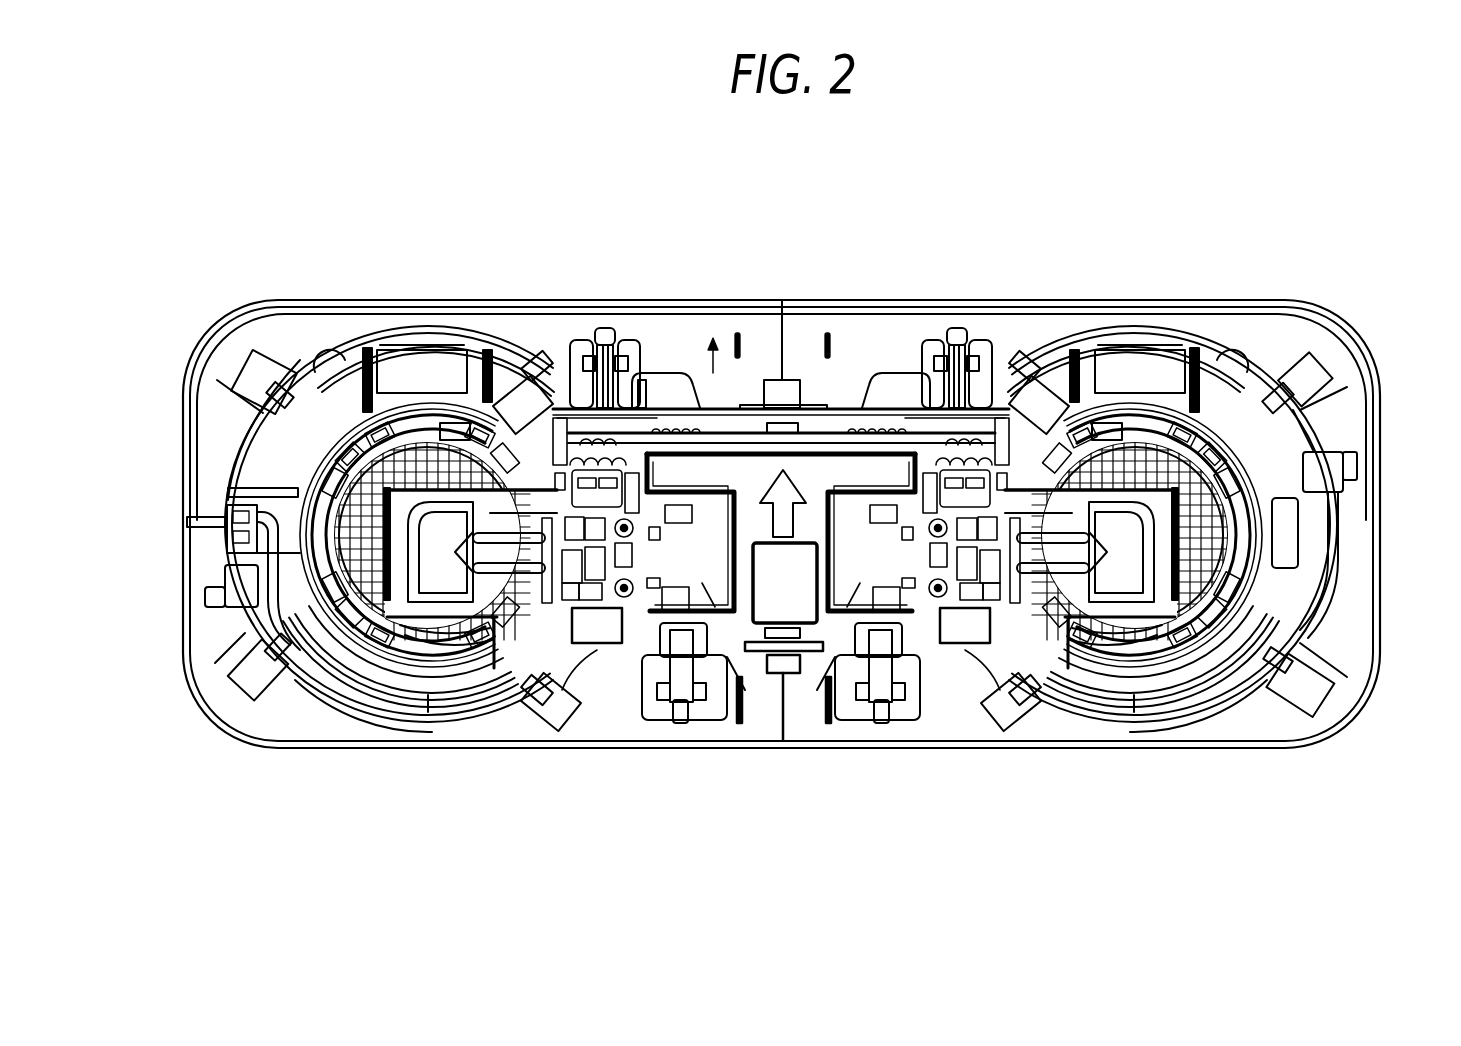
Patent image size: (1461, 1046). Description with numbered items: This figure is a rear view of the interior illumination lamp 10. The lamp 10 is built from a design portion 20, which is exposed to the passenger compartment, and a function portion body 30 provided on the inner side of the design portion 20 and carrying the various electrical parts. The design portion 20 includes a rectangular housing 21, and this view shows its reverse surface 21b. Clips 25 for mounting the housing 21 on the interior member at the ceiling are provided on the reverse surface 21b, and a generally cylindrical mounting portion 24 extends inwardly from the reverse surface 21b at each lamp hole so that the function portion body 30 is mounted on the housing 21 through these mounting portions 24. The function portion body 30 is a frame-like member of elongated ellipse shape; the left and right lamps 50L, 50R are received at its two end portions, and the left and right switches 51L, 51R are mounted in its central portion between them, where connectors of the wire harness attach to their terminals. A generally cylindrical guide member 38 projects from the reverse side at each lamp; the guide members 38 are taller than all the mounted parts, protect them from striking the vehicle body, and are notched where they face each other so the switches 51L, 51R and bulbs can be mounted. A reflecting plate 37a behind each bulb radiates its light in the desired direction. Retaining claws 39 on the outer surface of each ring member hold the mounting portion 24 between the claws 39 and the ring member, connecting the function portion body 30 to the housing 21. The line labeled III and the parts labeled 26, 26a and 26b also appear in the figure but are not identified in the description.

The interior illumination lamp 10 is at (1133, 250).
The section line III is at (408, 248).
The design portion 20 is at (630, 296).
The housing 21 is at (753, 322).
The reverse surface 21b is at (677, 372).
The mounting portion 24 is at (482, 716).
The clips 25 is at (598, 322).
The wiring plate 26 is at (838, 396).
The wiring plate portion 26a is at (690, 370).
The connector block 26b is at (633, 330).
The function portion body 30 is at (903, 360).
The reflecting plate 37a is at (418, 602).
The guide member 38 is at (320, 458).
The retaining claws 39 is at (230, 335).
The left lamp 50L is at (298, 326).
The right lamp 50R is at (1262, 340).
The left switch 51L is at (752, 650).
The right switch 51R is at (836, 650).